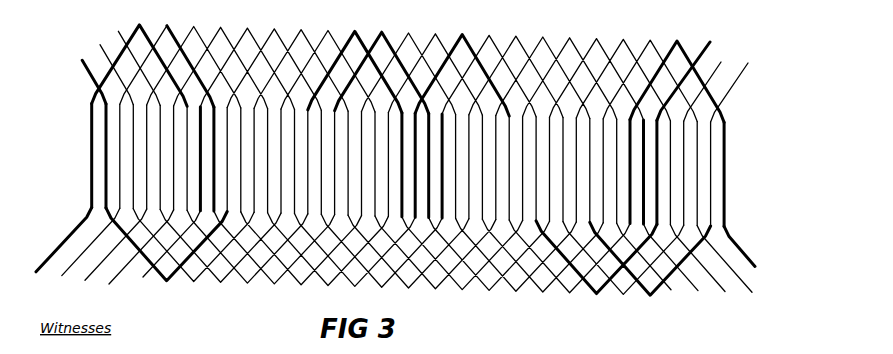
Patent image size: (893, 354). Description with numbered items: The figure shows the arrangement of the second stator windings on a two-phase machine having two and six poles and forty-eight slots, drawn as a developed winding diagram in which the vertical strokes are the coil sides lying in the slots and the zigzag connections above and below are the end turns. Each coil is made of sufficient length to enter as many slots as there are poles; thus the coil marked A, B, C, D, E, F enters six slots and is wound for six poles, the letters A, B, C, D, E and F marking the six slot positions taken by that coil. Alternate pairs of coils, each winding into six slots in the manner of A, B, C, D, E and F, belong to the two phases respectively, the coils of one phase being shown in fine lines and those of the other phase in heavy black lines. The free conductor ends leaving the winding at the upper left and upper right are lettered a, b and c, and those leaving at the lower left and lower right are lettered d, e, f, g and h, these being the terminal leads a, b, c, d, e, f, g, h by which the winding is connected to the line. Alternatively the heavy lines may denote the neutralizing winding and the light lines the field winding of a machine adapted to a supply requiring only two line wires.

The coil slot position A is at (90, 156).
The coil slot position B is at (195, 159).
The coil slot position C is at (305, 162).
The coil slot position D is at (409, 165).
The coil slot position E is at (523, 168).
The coil slot position F is at (625, 172).
The winding lead a is at (396, 74).
The winding lead b is at (412, 76).
The winding lead c is at (430, 71).
The winding lead d is at (360, 255).
The winding lead e is at (386, 256).
The winding lead f is at (410, 257).
The winding lead g is at (435, 259).
The winding lead h is at (453, 248).